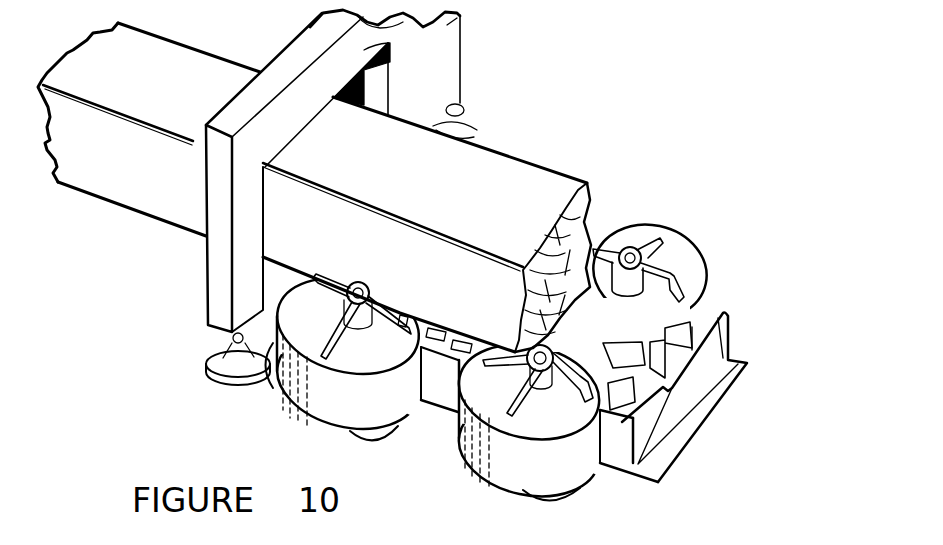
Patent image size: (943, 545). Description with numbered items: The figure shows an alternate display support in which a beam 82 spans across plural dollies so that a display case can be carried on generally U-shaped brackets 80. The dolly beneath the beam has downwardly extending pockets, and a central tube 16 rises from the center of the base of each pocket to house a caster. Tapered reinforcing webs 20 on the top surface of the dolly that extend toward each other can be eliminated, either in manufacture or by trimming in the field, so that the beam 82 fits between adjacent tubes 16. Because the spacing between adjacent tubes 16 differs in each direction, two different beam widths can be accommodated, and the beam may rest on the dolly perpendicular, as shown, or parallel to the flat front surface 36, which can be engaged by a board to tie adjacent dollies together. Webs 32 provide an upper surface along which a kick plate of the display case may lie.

The beam 82 is at (471, 199).
The U-shaped bracket 80 is at (212, 278).
The web 32 is at (622, 455).
The front surface 36 is at (716, 339).
The central tube 16 is at (515, 321).
The tapered reinforcing web 20 is at (652, 242).